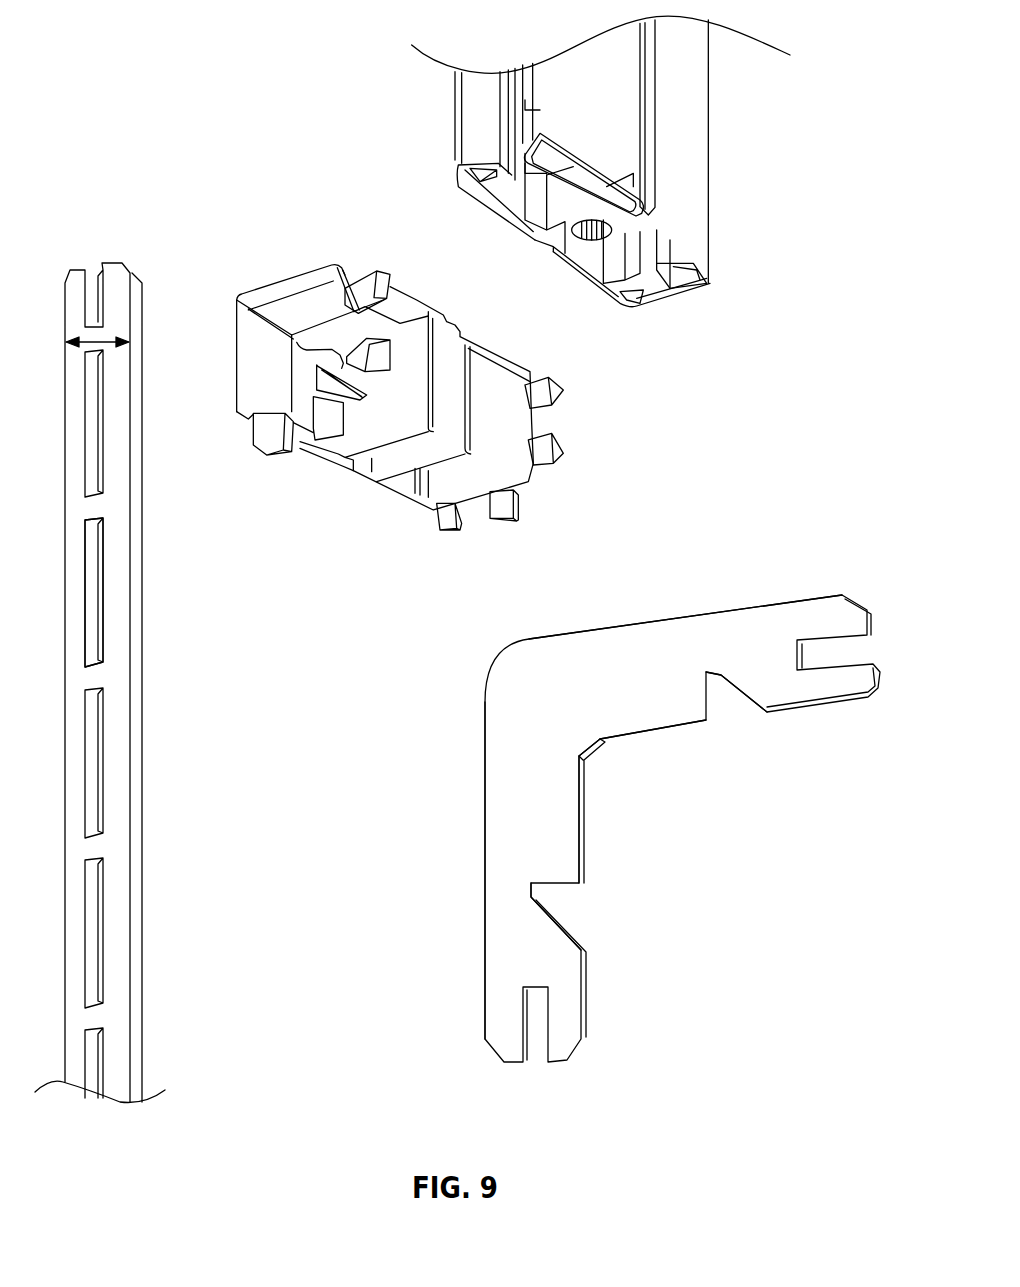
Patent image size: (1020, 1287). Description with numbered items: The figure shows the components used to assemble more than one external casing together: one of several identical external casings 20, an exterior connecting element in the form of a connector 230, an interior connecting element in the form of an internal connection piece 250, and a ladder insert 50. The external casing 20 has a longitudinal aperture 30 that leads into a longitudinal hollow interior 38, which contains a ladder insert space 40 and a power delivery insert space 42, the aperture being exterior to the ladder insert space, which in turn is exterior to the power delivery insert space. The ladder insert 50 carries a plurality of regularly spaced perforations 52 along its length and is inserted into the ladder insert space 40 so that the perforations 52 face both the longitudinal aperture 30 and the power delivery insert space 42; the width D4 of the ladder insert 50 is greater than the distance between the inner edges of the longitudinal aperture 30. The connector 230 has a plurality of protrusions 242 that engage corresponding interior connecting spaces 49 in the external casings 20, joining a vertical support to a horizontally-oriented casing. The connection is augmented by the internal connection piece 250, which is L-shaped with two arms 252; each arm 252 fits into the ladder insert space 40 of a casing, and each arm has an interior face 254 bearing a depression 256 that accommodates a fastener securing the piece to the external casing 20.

The external casing 20 is at (698, 100).
The longitudinal aperture 30 is at (660, 278).
The longitudinal hollow interior 38 is at (488, 217).
The ladder insert space 40 is at (600, 152).
The power delivery insert space 42 is at (620, 177).
The interior connecting space 49 is at (633, 305).
The ladder insert 50 is at (118, 1093).
The perforations 52 is at (92, 481).
The width of the ladder insert D4 is at (105, 332).
The connector 230 is at (292, 280).
The protrusion 242 is at (510, 530).
The internal connection piece 250 is at (646, 812).
The arm 252 is at (500, 843).
The interior face 254 is at (650, 777).
The depression 256 is at (571, 906).